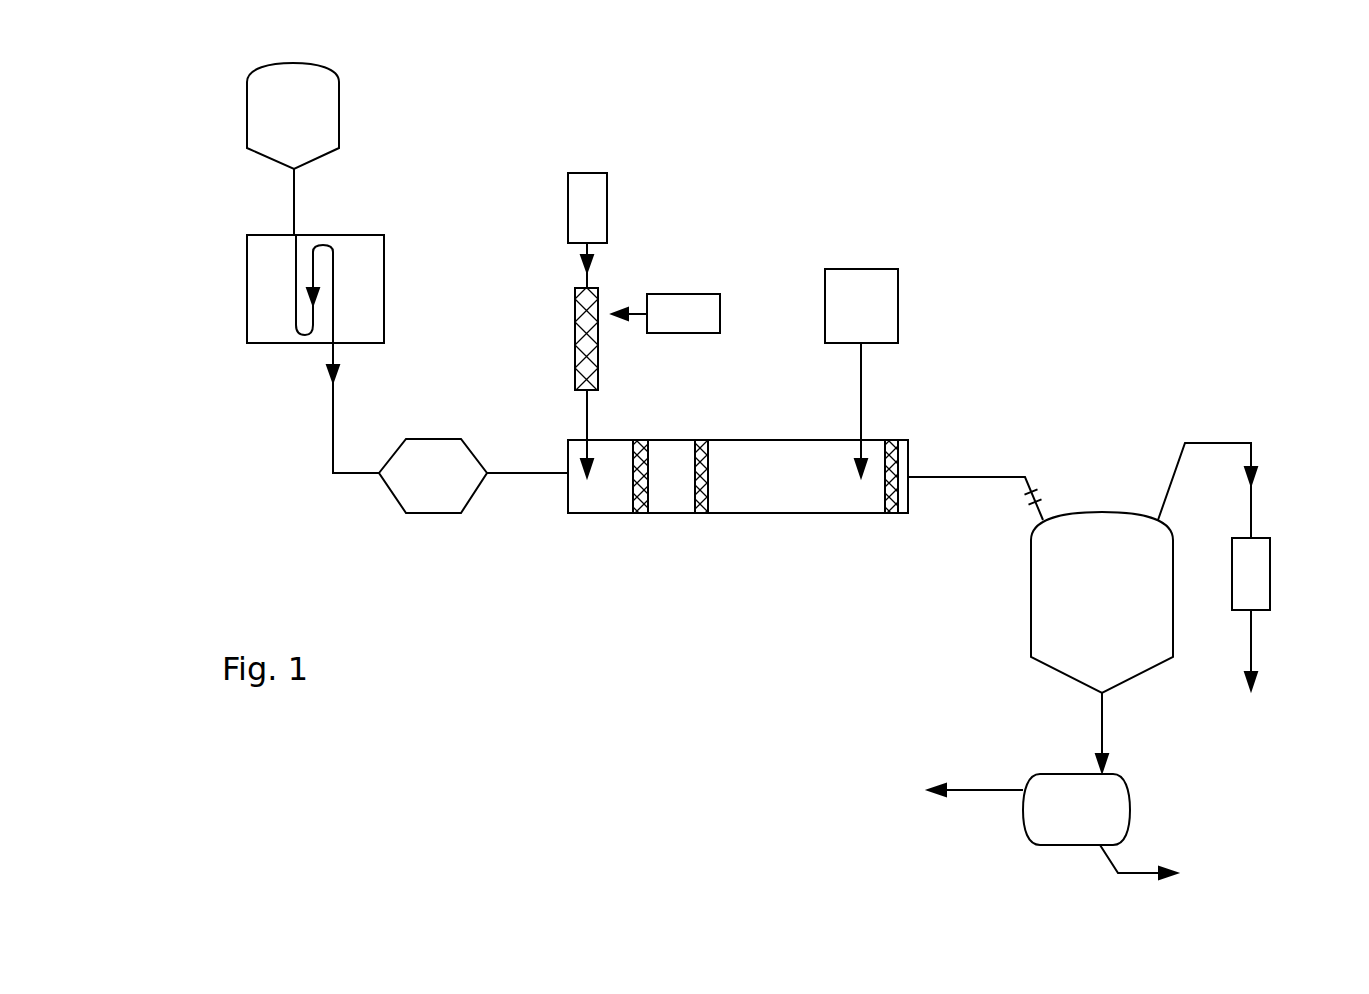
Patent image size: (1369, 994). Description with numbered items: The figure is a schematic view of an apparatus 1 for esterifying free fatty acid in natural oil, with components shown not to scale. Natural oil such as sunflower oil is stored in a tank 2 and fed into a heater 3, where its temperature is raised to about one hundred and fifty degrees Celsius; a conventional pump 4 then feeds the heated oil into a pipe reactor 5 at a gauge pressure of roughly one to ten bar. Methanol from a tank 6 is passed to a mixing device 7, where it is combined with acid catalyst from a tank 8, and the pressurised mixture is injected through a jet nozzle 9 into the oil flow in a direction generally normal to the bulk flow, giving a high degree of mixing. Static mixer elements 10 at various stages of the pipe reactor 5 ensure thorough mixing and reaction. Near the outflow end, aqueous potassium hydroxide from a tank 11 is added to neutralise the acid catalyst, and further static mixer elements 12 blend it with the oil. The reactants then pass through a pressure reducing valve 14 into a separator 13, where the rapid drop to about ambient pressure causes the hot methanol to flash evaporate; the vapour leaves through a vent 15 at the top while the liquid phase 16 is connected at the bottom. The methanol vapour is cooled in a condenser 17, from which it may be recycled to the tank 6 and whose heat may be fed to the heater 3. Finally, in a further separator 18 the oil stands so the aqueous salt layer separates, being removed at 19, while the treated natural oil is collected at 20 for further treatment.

The apparatus 1 is at (1000, 237).
The tank 2 is at (293, 116).
The heater 3 is at (384, 283).
The pump 4 is at (473, 476).
The pipe reactor 5 is at (738, 476).
The tank 6 is at (587, 230).
The mixing device 7 is at (576, 340).
The tank 8 is at (666, 313).
The jet nozzle 9 is at (600, 463).
The static mixer elements 10 is at (710, 452).
The tank 11 is at (861, 373).
The further static mixer elements 12 is at (898, 455).
The separator 13 is at (1102, 602).
The pressure reducing valve 14 is at (1052, 490).
The vent 15 is at (1168, 482).
The liquid phase 16 is at (1104, 744).
The condenser 17 is at (1270, 573).
The further separator 18 is at (1076, 809).
The aqueous layer outlet 19 is at (1156, 866).
The treated oil outlet 20 is at (956, 792).